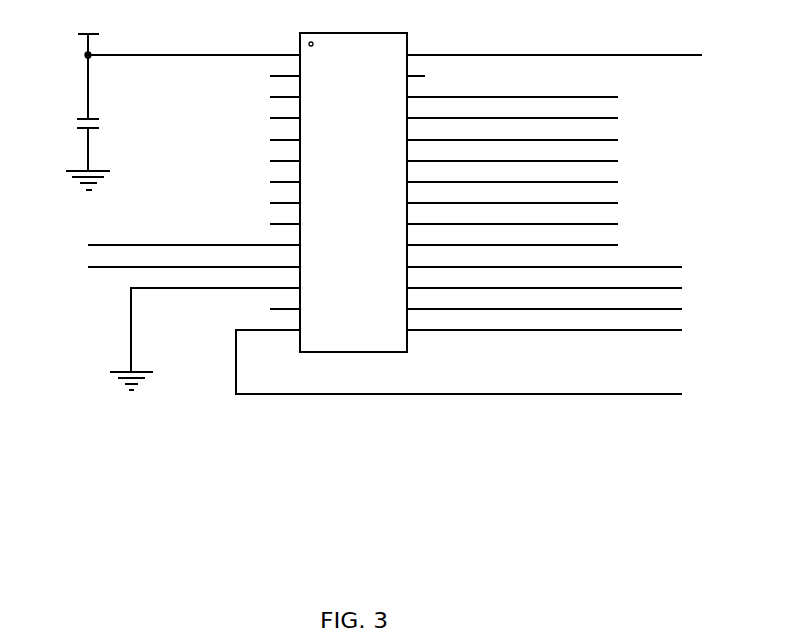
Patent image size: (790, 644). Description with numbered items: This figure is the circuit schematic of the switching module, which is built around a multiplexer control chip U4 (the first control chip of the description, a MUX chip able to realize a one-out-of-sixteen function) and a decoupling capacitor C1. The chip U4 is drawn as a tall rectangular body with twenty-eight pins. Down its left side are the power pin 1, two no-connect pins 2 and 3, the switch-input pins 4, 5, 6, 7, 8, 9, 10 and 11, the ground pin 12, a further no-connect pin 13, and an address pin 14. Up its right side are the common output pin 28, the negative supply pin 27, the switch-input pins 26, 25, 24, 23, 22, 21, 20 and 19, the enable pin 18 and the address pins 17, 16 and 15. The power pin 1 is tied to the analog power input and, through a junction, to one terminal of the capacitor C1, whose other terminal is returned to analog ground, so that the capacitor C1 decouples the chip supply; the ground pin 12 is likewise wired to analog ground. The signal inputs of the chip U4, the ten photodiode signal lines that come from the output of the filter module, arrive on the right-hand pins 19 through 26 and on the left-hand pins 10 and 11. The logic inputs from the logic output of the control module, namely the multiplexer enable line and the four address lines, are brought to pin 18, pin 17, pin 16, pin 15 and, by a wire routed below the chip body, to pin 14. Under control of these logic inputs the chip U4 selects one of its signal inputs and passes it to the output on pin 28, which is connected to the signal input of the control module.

The capacitor C1 is at (83, 117).
The first control chip U4 is at (395, 224).
The pin 1 VDD 1 is at (216, 50).
The pin 2 NC 2 is at (303, 71).
The pin 3 NC 3 is at (303, 92).
The pin 4 S16 4 is at (306, 113).
The pin 5 S15 5 is at (306, 135).
The pin 6 S14 6 is at (306, 156).
The pin 7 S13 7 is at (306, 177).
The pin 8 S12 8 is at (306, 198).
The pin 9 S11 9 is at (305, 219).
The pin 10 S10 10 is at (215, 240).
The pin 11 S9 11 is at (211, 262).
The pin 12 GND 12 is at (225, 341).
The pin 13 NC 13 is at (300, 304).
The pin 14 A3 14 is at (459, 353).
The pin 15 A2 15 is at (528, 325).
The pin 16 A1 16 is at (529, 304).
The pin 17 A0 17 is at (528, 283).
The pin 18 EN 18 is at (528, 262).
The pin 19 S1 19 is at (498, 240).
The pin 20 S2 20 is at (497, 219).
The pin 21 S3 21 is at (497, 198).
The pin 22 S4 22 is at (497, 177).
The pin 23 S5 23 is at (497, 156).
The pin 24 S6 24 is at (497, 135).
The pin 25 S7 25 is at (497, 113).
The pin 26 S8 26 is at (497, 92).
The pin 27 VSS 27 is at (402, 71).
The pin 28 D 28 is at (543, 50).